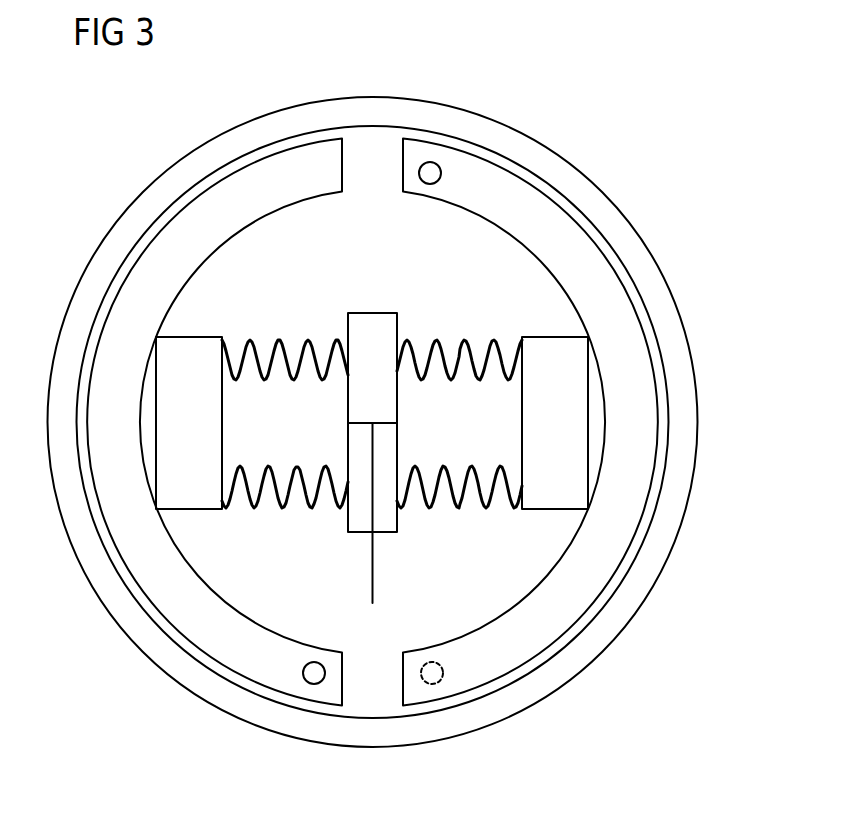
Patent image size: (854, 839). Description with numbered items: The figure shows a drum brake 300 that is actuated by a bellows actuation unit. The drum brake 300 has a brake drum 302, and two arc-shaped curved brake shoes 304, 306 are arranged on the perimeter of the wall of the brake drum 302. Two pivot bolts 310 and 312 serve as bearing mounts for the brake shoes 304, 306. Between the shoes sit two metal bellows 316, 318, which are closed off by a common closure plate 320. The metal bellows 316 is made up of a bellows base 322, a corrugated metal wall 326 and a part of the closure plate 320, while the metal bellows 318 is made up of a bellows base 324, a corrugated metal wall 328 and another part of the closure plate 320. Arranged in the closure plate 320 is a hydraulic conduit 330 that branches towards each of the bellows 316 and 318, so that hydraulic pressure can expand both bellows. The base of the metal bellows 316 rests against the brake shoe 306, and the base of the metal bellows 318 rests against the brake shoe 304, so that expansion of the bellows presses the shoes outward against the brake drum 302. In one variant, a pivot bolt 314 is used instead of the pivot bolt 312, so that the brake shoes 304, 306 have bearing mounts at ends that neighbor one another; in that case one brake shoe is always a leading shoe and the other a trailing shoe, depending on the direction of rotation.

The drum brake 300 is at (552, 130).
The brake drum 302 is at (592, 195).
The brake shoe 304 is at (602, 278).
The brake shoe 306 is at (138, 293).
The pivot bolt 310 is at (314, 684).
The pivot bolt 312 is at (431, 162).
The pivot bolt 314 is at (432, 684).
The metal bellows 316 is at (270, 324).
The metal bellows 318 is at (479, 324).
The closure plate 320 is at (371, 312).
The bellows base 322 is at (205, 337).
The bellows base 324 is at (547, 337).
The corrugated metal wall 326 is at (304, 512).
The corrugated metal wall 328 is at (442, 512).
The hydraulic conduit 330 is at (374, 590).